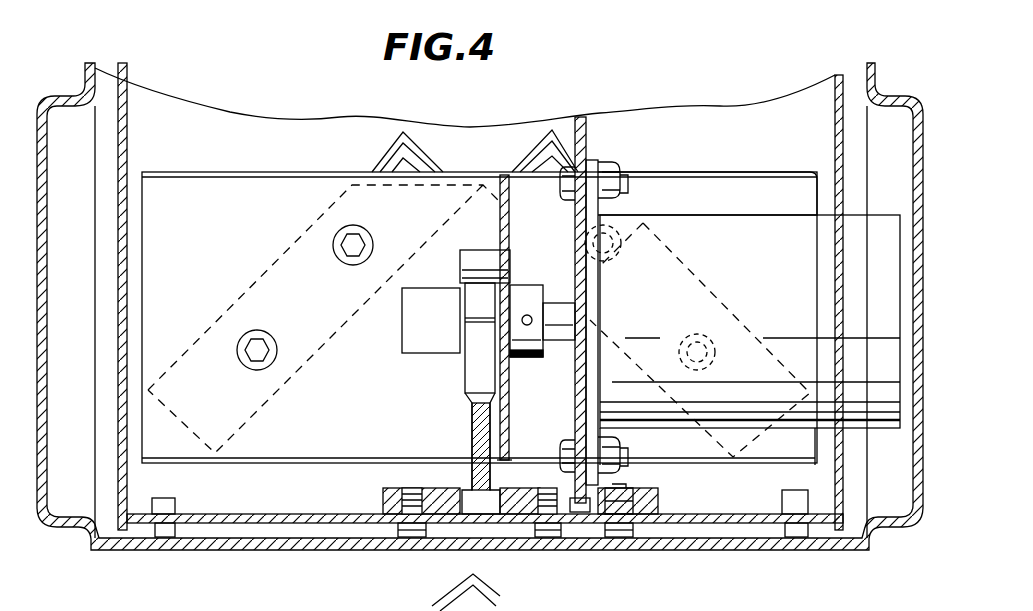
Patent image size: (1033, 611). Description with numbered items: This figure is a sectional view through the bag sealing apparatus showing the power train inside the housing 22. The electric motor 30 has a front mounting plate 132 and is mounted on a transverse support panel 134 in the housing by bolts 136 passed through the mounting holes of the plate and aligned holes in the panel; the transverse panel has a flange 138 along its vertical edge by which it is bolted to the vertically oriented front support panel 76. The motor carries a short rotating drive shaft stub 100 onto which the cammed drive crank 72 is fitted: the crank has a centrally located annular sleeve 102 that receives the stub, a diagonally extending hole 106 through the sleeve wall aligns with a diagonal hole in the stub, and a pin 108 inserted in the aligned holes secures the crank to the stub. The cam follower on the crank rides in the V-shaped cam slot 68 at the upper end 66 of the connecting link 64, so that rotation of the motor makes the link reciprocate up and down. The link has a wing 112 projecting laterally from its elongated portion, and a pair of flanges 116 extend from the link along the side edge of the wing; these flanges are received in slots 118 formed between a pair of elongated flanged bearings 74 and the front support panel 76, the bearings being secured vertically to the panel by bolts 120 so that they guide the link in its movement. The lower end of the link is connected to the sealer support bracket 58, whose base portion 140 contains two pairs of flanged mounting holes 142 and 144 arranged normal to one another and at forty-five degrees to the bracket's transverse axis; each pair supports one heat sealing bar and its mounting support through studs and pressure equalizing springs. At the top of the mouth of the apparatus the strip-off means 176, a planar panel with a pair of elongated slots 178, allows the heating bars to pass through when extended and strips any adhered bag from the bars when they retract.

The housing 22 is at (721, 561).
The strip-off means 176 is at (255, 135).
The front support panel 76 is at (240, 528).
The base portion 140 is at (172, 196).
The sealer support bracket 58 is at (700, 188).
The electric motor 30 is at (740, 238).
The flanged mounting holes 142 is at (621, 247).
The flanged mounting holes 144 is at (310, 283).
The elongated slots 178 is at (385, 140).
The transverse support panel 134 is at (585, 122).
The bolts 136 is at (573, 200).
The front mounting plate 132 is at (618, 200).
The connecting link 64 is at (470, 410).
The V-shaped cam slot 68 is at (470, 373).
The cammed drive crank 72 is at (478, 428).
The diagonally extending hole 106 is at (517, 298).
The pin 108 is at (528, 315).
The annular sleeve 102 is at (530, 357).
The drive shaft stub 100 is at (572, 323).
The flanged bearings 74 is at (384, 496).
The slots 118 is at (452, 448).
The bolts 120 is at (425, 530).
The flange 138 is at (650, 510).
The flanges 116 is at (486, 590).
The wing 112 is at (386, 604).
The upper end of the connecting link 66 is at (551, 604).